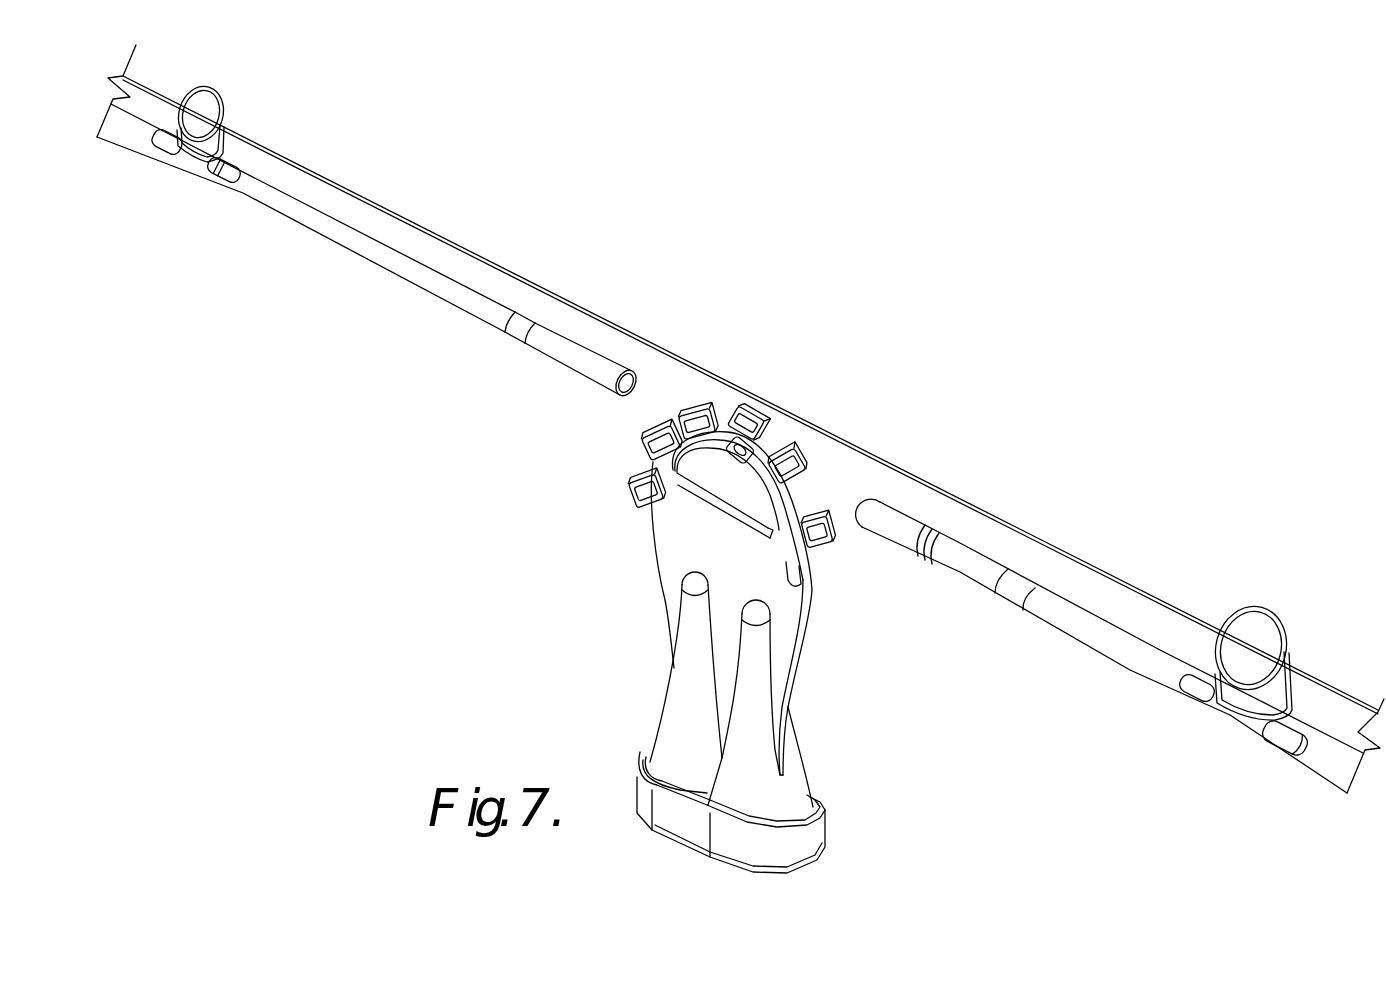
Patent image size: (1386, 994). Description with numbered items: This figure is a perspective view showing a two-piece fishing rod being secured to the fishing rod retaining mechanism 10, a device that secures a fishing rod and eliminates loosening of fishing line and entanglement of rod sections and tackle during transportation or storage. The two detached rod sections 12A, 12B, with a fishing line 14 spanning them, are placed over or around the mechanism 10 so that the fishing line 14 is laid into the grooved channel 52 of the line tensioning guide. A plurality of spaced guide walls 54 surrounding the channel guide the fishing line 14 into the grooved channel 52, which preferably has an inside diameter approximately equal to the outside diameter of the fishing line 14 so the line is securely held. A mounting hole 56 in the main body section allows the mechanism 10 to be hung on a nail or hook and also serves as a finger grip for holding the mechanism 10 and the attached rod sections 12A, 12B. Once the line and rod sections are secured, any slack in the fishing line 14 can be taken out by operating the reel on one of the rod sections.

The fishing rod retaining mechanism 10 is at (699, 587).
The rod section 12A is at (1063, 618).
The rod section 12B is at (488, 310).
The fishing line 14 is at (867, 448).
The grooved channel 52 is at (768, 445).
The guide walls 54 is at (732, 408).
The mounting hole 56 is at (720, 477).